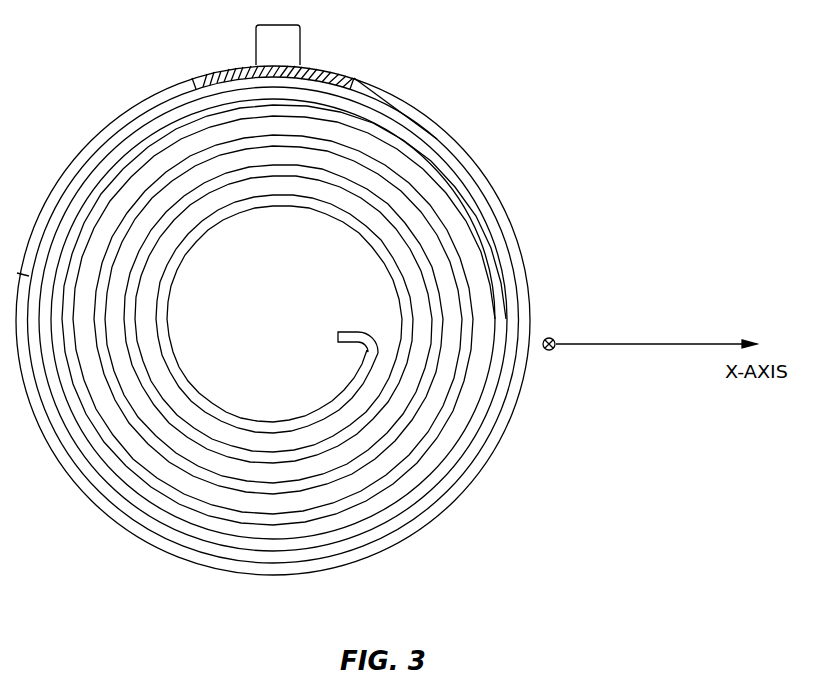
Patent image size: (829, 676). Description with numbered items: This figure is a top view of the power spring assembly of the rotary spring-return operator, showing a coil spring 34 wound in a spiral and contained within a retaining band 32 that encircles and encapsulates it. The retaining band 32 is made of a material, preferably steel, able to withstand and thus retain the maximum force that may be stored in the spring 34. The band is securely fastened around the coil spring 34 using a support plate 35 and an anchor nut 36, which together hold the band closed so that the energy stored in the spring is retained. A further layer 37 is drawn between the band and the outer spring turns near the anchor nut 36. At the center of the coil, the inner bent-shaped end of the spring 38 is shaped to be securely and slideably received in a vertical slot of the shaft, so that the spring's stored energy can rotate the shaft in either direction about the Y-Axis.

The retaining band 32 is at (384, 87).
The coil spring 34 is at (436, 142).
The support plate 35 is at (349, 78).
The anchor nut 36 is at (262, 44).
The outer wrap layer 37 is at (317, 65).
The inner bent-shaped end of the spring 38 is at (338, 336).